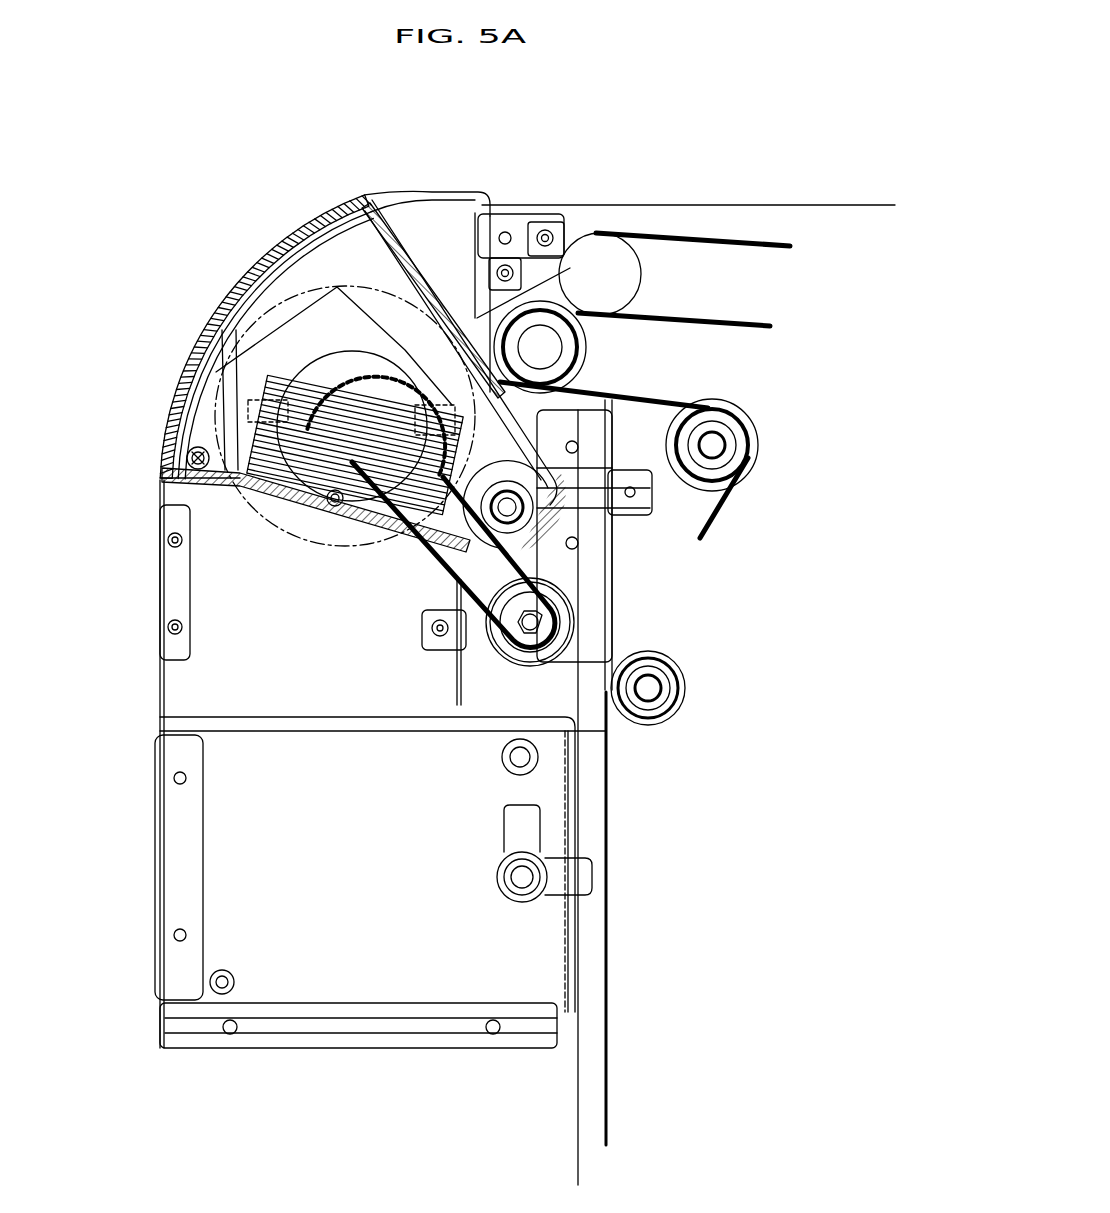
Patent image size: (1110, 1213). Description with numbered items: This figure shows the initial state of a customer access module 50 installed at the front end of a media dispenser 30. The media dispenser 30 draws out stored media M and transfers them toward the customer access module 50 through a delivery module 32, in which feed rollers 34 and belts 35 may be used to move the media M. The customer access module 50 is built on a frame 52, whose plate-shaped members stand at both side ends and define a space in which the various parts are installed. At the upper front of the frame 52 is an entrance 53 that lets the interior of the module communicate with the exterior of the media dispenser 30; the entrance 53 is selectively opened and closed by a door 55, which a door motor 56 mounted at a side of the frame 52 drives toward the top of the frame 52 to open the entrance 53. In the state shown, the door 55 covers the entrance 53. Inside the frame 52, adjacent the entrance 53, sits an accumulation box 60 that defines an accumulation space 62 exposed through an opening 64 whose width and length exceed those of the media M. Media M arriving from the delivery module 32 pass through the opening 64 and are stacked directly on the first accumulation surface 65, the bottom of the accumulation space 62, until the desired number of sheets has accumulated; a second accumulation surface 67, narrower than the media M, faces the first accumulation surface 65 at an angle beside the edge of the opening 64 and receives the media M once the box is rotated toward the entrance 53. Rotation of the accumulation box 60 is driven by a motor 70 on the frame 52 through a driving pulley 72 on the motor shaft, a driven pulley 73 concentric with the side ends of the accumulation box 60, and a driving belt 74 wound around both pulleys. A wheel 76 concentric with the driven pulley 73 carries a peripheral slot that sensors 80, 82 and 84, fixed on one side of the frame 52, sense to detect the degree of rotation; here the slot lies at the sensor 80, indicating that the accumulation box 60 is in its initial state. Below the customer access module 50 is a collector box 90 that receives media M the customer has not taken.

The media dispenser 30 is at (645, 185).
The delivery module 32 is at (725, 225).
The feed rollers 34 is at (625, 278).
The belts 35 is at (762, 243).
The customer access module 50 is at (145, 657).
The frame 52 is at (418, 225).
The entrance 53 is at (318, 222).
The door 55 is at (258, 266).
The door motor 56 is at (610, 520).
The accumulation box 60 is at (258, 337).
The accumulation space 62 is at (356, 335).
The opening 64 is at (372, 225).
The first accumulation surface 65 is at (195, 458).
The second accumulation surface 67 is at (265, 500).
The motor 70 is at (578, 607).
The driving pulley 72 is at (440, 630).
The driven pulley 73 is at (640, 490).
The driving belt 74 is at (540, 620).
The wheel 76 is at (540, 532).
The sensor 80 is at (215, 408).
The sensor 82 is at (338, 548).
The sensor 84 is at (440, 335).
The collector box 90 is at (220, 886).
The media M is at (286, 270).